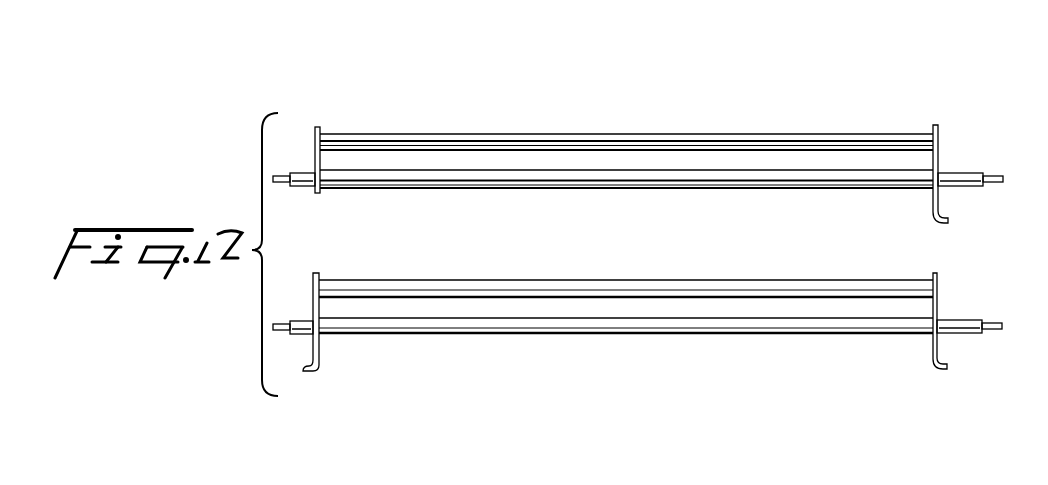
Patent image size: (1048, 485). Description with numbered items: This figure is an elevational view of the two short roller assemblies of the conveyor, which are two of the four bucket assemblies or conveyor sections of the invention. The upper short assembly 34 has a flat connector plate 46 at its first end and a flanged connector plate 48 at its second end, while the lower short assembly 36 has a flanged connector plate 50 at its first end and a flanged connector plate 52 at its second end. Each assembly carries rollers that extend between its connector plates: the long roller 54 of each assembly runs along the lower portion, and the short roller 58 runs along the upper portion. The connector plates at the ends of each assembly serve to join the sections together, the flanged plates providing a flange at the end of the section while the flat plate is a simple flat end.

The short assembly 34 is at (618, 127).
The short assembly 36 is at (595, 272).
The flat connector plate 46 is at (315, 132).
The flanged connector plate 48 is at (938, 158).
The flanged connector plate 50 is at (313, 302).
The flanged connector plate 52 is at (938, 308).
The long roller 54 is at (773, 180).
The short roller 58 is at (780, 135).